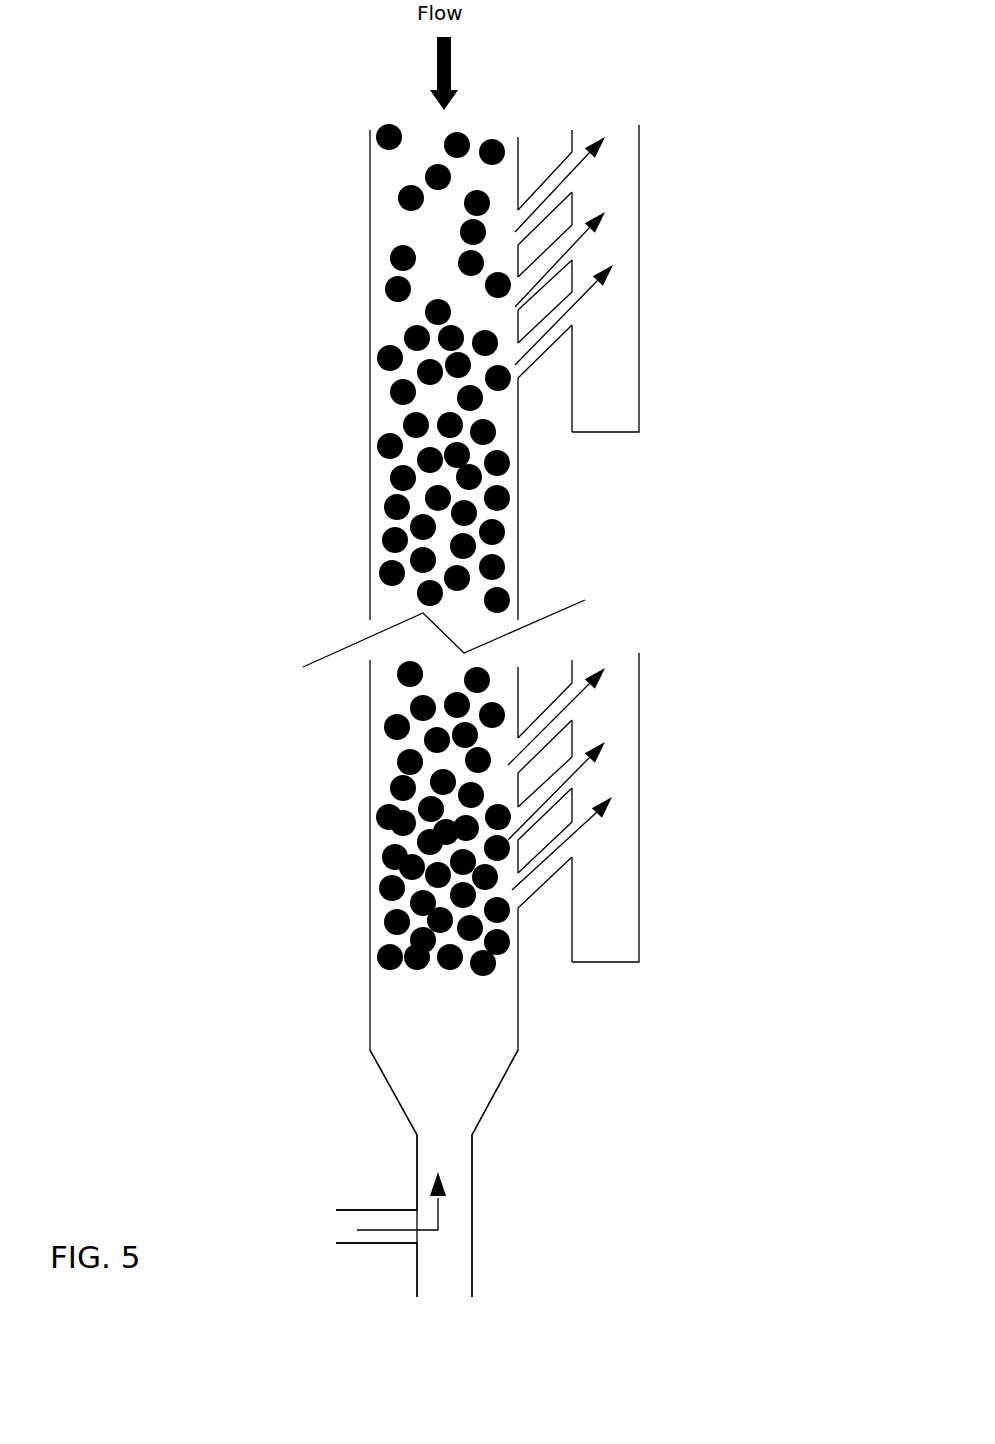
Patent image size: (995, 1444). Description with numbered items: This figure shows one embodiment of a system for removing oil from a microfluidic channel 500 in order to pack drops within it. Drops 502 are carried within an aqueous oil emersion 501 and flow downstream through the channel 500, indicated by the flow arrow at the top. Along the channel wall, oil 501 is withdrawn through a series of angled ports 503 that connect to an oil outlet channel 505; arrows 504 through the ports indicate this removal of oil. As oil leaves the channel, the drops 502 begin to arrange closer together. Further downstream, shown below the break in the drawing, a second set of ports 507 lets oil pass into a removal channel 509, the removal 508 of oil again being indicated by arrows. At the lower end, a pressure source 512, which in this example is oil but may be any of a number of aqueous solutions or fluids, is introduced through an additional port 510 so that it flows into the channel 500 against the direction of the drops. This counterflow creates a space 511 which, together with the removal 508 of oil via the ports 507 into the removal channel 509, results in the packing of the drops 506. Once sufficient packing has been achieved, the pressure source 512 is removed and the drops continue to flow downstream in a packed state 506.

The microfluidic channel 500 is at (373, 176).
The aqueous oil emersion 501 is at (433, 231).
The drops 502 is at (494, 140).
The ports 503 is at (542, 362).
The first stage fluid outflow 504 is at (596, 138).
The oil outlet channel 505 is at (640, 255).
The packed drops 506 is at (397, 907).
The ports 507 is at (545, 885).
The removal of oil 508 is at (598, 660).
The removal channel 509 is at (643, 752).
The additional port 510 is at (328, 1235).
The space 511 is at (430, 1036).
The pressure source 512 is at (443, 1213).